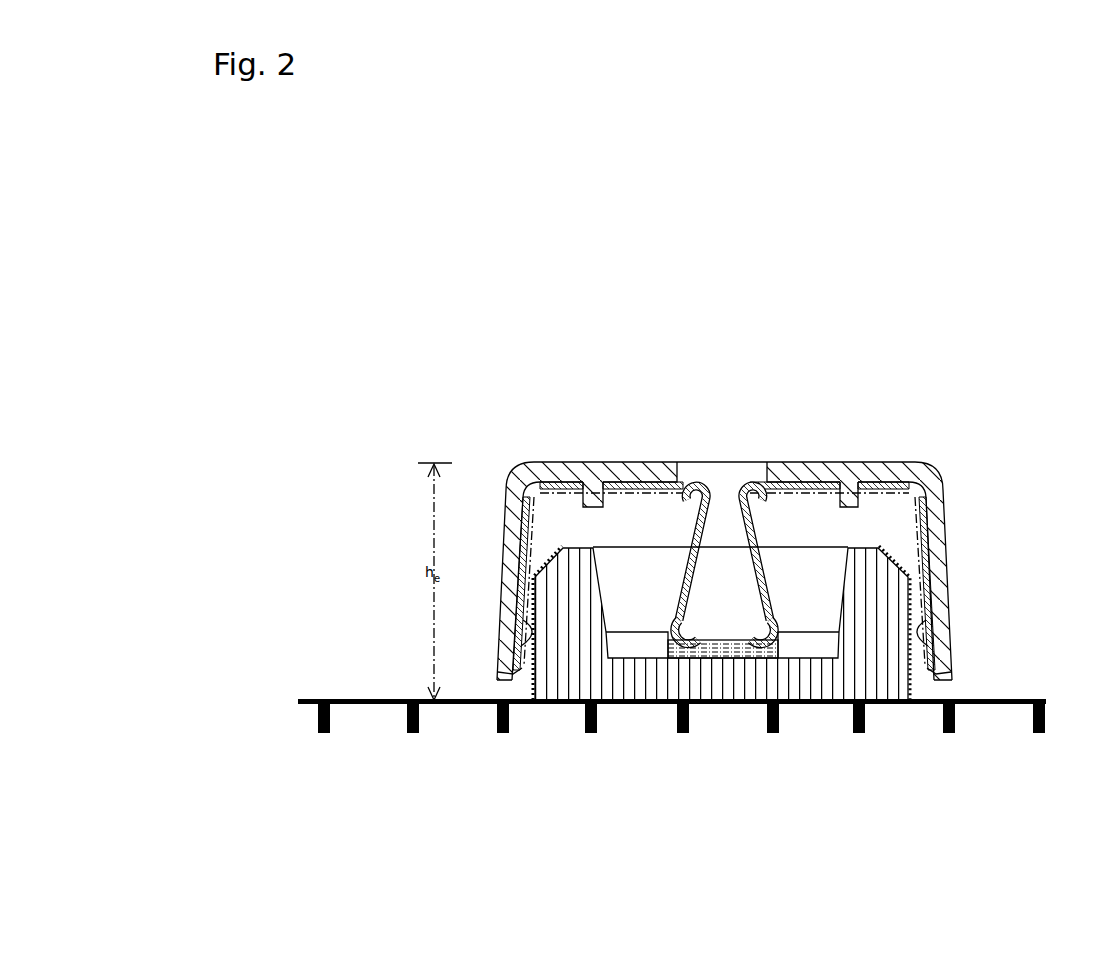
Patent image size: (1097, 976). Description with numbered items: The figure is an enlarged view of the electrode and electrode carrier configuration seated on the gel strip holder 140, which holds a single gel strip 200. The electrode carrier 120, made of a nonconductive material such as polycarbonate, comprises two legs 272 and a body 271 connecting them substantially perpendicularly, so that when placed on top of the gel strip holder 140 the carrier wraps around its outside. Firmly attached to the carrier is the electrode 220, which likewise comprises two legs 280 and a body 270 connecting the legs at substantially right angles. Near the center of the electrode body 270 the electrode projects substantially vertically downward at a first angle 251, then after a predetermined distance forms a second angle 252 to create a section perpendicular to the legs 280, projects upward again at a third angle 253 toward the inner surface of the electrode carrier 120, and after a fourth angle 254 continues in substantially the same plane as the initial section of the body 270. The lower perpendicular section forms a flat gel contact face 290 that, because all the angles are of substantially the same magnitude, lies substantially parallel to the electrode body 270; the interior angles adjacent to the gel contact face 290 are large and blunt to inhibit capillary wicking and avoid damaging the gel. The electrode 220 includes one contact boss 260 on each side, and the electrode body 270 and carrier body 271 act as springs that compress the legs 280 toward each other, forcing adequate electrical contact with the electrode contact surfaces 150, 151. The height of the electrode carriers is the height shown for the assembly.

The electrode carrier 120 is at (917, 470).
The gel strip holder 140 is at (872, 683).
The electrode contact surface 150 is at (535, 697).
The electrode contact surface 151 is at (912, 687).
The gel strip 200 is at (737, 650).
The electrode 220 is at (556, 484).
The first angle 251 is at (684, 492).
The second angle 252 is at (683, 642).
The third angle 253 is at (762, 645).
The fourth angle 254 is at (752, 498).
The contact boss 260 is at (918, 637).
The electrode body 270 is at (633, 488).
The electrode carrier body 271 is at (842, 468).
The electrode carrier legs 272 is at (947, 662).
The electrode legs 280 is at (913, 516).
The gel contact face 290 is at (718, 648).